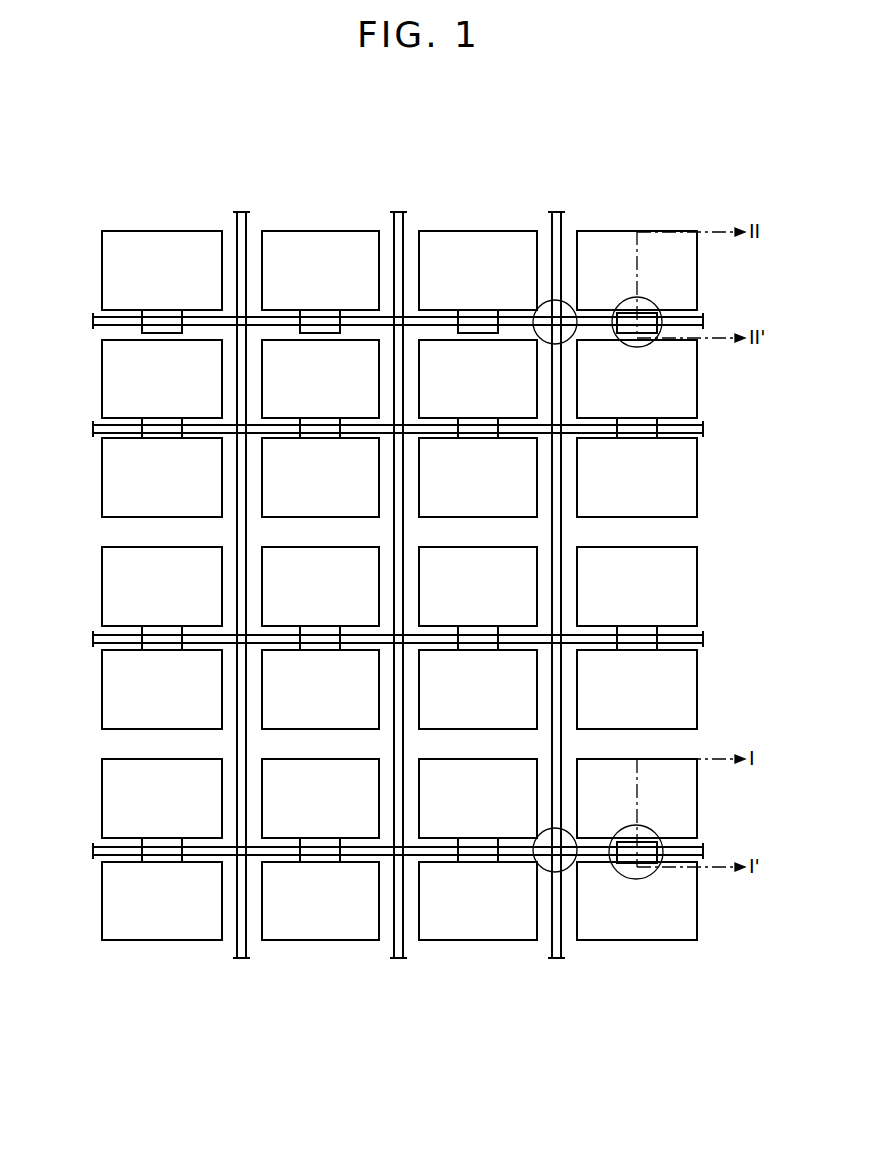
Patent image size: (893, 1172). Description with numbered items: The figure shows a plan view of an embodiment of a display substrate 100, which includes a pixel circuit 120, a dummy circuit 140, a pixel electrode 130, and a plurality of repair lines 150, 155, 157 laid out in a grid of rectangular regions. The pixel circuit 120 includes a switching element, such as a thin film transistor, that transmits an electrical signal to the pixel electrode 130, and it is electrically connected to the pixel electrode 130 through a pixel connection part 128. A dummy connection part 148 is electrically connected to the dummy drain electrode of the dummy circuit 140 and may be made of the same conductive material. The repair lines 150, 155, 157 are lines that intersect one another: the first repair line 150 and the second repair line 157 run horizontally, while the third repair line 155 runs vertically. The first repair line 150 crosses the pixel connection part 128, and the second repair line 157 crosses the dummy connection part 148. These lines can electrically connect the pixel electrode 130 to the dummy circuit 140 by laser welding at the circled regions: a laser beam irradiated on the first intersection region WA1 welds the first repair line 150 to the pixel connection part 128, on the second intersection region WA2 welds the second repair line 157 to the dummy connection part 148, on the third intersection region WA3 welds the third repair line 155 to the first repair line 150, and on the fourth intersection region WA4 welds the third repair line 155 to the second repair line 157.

The display substrate 100 is at (418, 127).
The pixel circuit 120 is at (682, 779).
The pixel connection part 128 is at (637, 857).
The pixel electrode 130 is at (682, 923).
The dummy circuit 140 is at (683, 256).
The dummy connection part 148 is at (643, 317).
The first repair line 150 is at (700, 851).
The third repair line 155 is at (554, 940).
The second repair line 157 is at (700, 322).
The first intersection region WA1 is at (662, 825).
The second intersection region WA2 is at (656, 342).
The third intersection region WA3 is at (566, 868).
The fourth intersection region WA4 is at (567, 304).